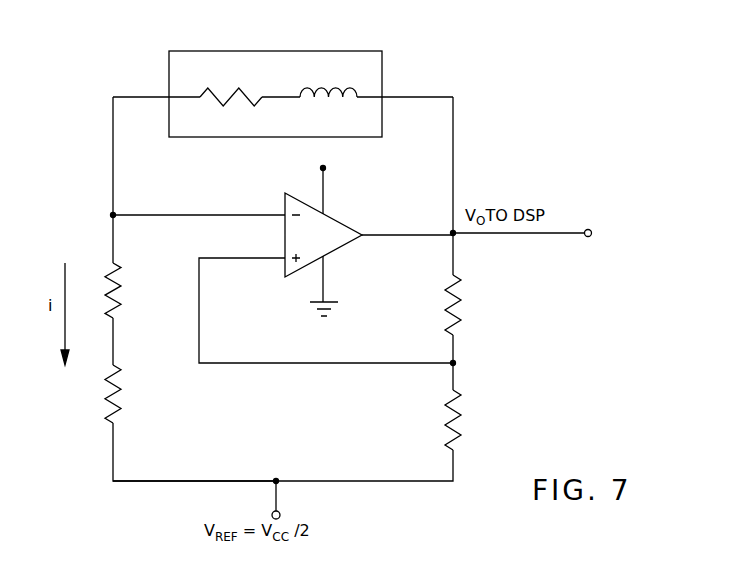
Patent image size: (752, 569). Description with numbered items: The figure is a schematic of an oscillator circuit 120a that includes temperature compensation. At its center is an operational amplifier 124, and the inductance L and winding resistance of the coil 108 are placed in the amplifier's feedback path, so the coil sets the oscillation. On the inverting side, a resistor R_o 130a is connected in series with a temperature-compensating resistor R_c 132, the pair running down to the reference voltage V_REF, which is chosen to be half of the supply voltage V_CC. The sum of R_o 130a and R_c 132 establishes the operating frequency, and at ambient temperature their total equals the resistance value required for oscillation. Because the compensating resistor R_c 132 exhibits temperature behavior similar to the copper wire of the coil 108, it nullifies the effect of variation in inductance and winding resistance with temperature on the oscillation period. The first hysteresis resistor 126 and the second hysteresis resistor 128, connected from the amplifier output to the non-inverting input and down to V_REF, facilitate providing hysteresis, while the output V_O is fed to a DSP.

The coil 108 is at (205, 51).
The operational amplifier 124 is at (344, 245).
The resistor R_o 130a is at (116, 262).
The temperature-compensating resistor R_c 132 is at (120, 418).
The resistor R1 126 is at (463, 290).
The resistor R2 128 is at (463, 410).
The oscillator circuit 120a is at (78, 479).